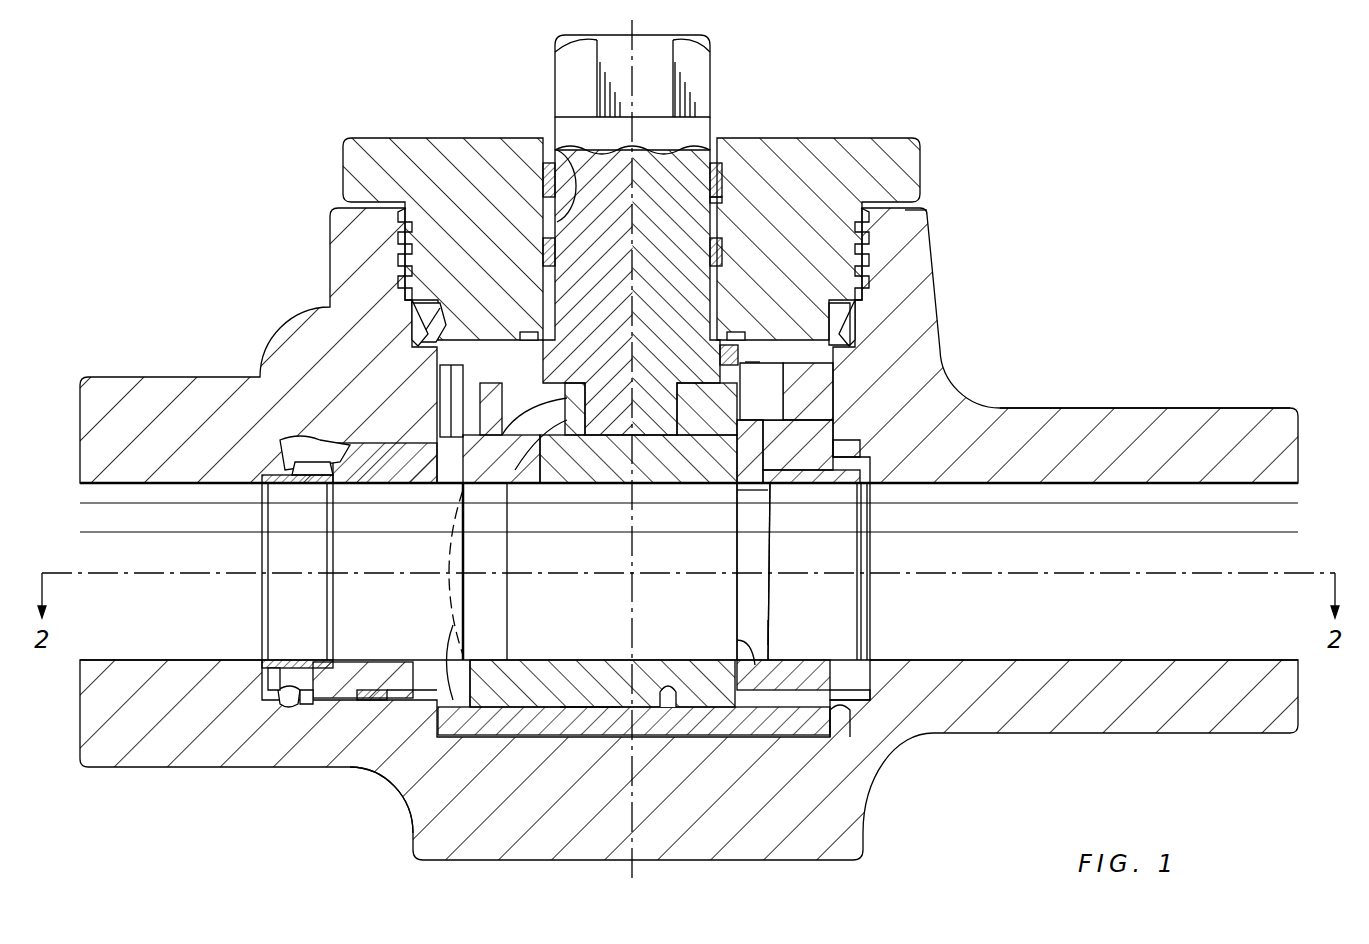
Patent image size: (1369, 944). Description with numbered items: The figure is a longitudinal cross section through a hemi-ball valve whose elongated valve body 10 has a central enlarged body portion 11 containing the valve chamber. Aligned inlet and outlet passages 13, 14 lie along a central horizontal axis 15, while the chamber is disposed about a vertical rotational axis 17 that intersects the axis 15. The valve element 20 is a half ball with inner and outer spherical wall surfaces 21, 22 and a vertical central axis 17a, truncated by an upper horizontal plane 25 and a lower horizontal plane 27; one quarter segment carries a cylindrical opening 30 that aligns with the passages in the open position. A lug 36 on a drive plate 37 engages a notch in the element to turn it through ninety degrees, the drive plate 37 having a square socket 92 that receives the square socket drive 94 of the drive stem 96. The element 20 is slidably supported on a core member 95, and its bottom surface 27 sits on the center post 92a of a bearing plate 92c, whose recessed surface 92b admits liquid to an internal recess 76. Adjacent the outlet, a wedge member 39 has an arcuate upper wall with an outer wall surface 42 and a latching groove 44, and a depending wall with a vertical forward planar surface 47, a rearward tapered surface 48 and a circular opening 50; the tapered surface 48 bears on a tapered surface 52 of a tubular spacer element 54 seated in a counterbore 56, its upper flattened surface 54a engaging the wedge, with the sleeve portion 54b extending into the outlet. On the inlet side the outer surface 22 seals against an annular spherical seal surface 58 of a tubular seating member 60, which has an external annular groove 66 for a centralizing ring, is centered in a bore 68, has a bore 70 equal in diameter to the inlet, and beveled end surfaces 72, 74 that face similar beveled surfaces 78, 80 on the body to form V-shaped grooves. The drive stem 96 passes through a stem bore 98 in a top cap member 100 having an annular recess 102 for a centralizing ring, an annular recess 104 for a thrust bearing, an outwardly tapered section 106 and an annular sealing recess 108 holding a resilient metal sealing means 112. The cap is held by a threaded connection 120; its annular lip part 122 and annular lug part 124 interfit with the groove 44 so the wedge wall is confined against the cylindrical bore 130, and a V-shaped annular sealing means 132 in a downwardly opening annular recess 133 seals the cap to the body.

The valve body 10 is at (1174, 401).
The central enlarged body portion 11 is at (940, 231).
The inlet passage 13 is at (175, 487).
The outlet passage 14 is at (1222, 486).
The central horizontal axis 15 is at (1173, 573).
The vertical rotational axis 17 is at (632, 78).
The vertical central axis of valve element 17a is at (630, 602).
The valve element 20 is at (496, 490).
The inner spherical wall surface 21 is at (530, 655).
The outer spherical wall surface 22 is at (405, 846).
The upper horizontal plane 25 is at (565, 440).
The lower horizontal plane 27 is at (503, 710).
The cylindrical opening 30 is at (453, 625).
The lug 36 is at (575, 425).
The drive plate 37 is at (710, 420).
The wedge member 39 is at (782, 632).
The outer wall surface 42 is at (836, 442).
The latching groove 44 is at (872, 390).
The vertical forward planar surface 47 is at (737, 597).
The rearward tapered surface 48 is at (771, 610).
The circular opening 50 is at (745, 640).
The tapered surface 52 is at (764, 490).
The tubular spacer element 54 is at (848, 712).
The upper flattened surface 54a is at (820, 474).
The seat ring sleeve 54b is at (863, 488).
The counterbore 56 is at (862, 672).
The annular spherical seal surface 58 is at (472, 493).
The tubular seating member 60 is at (425, 680).
The external annular groove 66 is at (373, 702).
The bore 68 is at (340, 702).
The bore of seating member 70 is at (395, 695).
The inwardly facing beveled end surface 72 is at (288, 706).
The outwardly facing beveled end surface 74 is at (302, 703).
The internal recess 76 is at (290, 700).
The annular beveled surface 78 is at (280, 463).
The annular beveled surface 80 is at (298, 458).
The square shaped socket 92 is at (653, 410).
The center post 92a is at (680, 707).
The recessed surface 92b is at (862, 770).
The bearing plate 92c is at (587, 723).
The square shaped socket drive 94 is at (613, 420).
The core member 95 is at (707, 720).
The drive stem 96 is at (726, 170).
The stem bore 98 is at (550, 118).
The top cap member 100 is at (365, 160).
The annular recess 102 is at (724, 195).
The annular recess 104 is at (508, 187).
The outwardly tapered section 106 is at (755, 362).
The annular sealing recess 108 is at (725, 352).
The annular resilient metal sealing means 112 is at (540, 333).
The threaded connection 120 is at (912, 210).
The annular lip part 122 is at (866, 360).
The annular lug part 124 is at (840, 420).
The cylindrical bore 130 is at (805, 430).
The V shaped annular sealing means 132 is at (418, 338).
The annular recess 133 is at (420, 312).